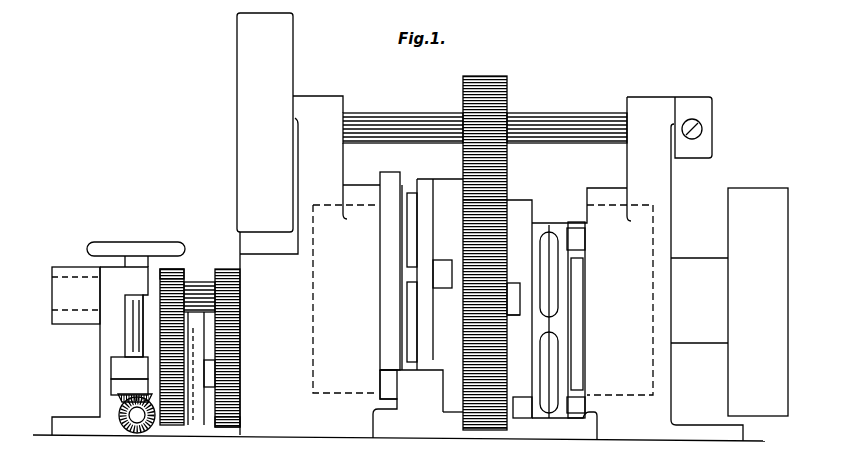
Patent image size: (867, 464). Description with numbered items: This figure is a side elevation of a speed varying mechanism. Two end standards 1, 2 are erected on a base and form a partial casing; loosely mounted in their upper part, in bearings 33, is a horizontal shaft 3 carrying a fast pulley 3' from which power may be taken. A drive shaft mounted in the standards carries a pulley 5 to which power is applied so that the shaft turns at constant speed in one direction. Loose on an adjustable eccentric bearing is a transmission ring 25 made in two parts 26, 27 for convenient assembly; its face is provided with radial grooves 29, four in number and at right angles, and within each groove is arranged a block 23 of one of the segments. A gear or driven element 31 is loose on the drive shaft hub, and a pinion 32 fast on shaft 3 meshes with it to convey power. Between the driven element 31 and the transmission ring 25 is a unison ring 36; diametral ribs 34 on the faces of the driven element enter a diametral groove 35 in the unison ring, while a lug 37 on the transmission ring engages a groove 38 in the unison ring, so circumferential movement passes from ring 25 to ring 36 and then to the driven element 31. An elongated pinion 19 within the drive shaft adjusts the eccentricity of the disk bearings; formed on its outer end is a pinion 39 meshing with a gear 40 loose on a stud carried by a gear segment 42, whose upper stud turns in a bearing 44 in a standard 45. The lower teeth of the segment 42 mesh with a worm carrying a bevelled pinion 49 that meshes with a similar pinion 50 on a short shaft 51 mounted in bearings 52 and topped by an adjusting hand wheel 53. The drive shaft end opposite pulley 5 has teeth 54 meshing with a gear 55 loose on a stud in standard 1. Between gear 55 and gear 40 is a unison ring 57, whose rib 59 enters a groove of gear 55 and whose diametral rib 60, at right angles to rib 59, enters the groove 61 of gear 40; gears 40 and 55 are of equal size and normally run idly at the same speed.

The end standard 1 is at (335, 157).
The end standard 2 is at (627, 163).
The horizontal shaft 3 is at (567, 119).
The pulley 3' is at (250, 122).
The pulley 5 is at (756, 196).
The elongated pinion 19 is at (206, 303).
The block 23 is at (390, 176).
The transmission ring 25 is at (416, 182).
The transmission ring part 26 is at (404, 372).
The transmission ring part 27 is at (423, 372).
The radial groove 29 is at (579, 230).
The driven element 31 is at (478, 432).
The pinion 32 is at (481, 86).
The bearing 33 is at (338, 108).
The diametral rib 34 is at (512, 284).
The diametral groove 35 is at (512, 316).
The unison ring 36 is at (447, 186).
The lug 37 is at (441, 268).
The groove 38 is at (442, 290).
The pinion 39 is at (179, 278).
The gear 40 is at (170, 427).
The gear segment 42 is at (125, 343).
The bearing 44 is at (62, 272).
The standard 45 is at (100, 333).
The bevelled pinion 49 is at (131, 431).
The bevelled pinion 50 is at (123, 403).
The short shaft 51 is at (114, 358).
The bearing 52 is at (135, 377).
The adjusting hand wheel 53 is at (112, 243).
The teeth 54 is at (226, 270).
The gear 55 is at (231, 418).
The unison ring 57 is at (203, 421).
The rib 59 is at (206, 376).
The diametral rib 60 is at (189, 430).
The groove 61 is at (197, 350).